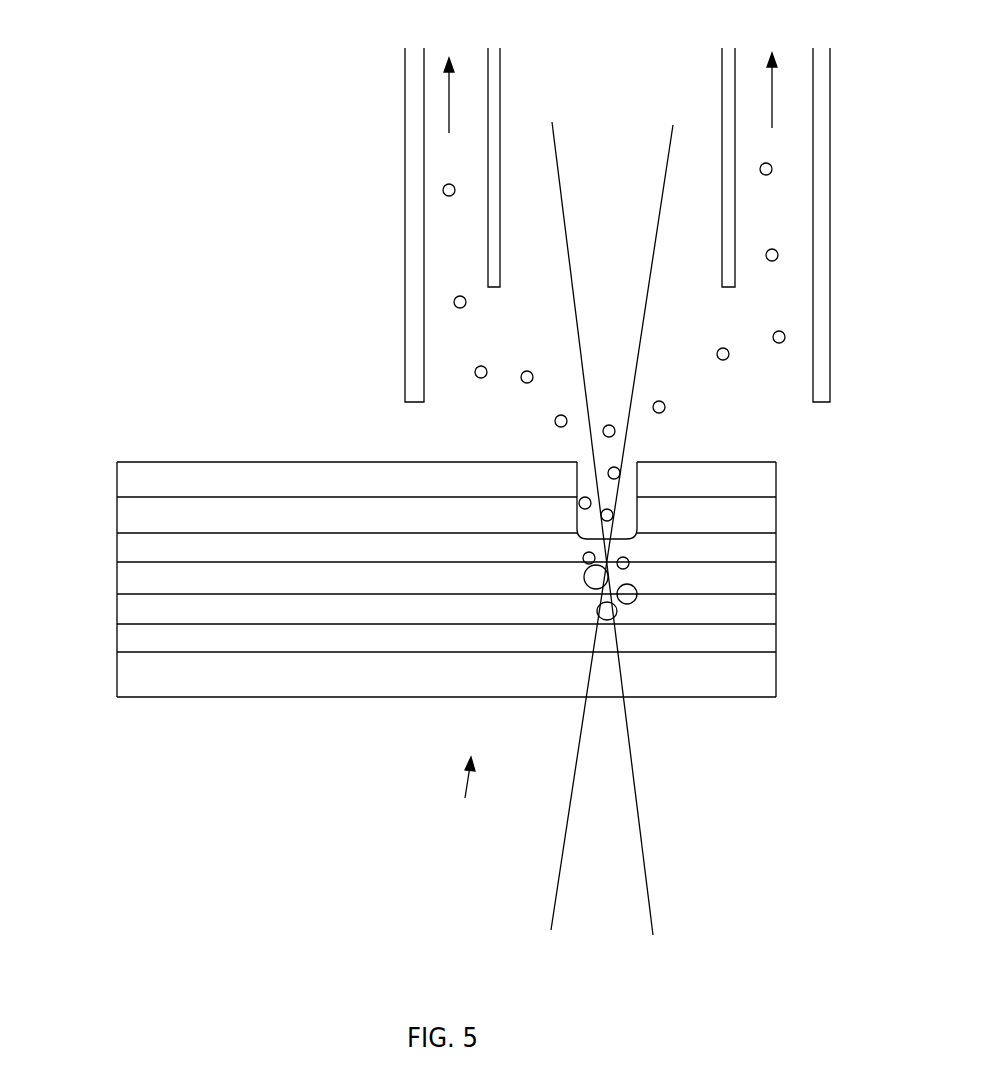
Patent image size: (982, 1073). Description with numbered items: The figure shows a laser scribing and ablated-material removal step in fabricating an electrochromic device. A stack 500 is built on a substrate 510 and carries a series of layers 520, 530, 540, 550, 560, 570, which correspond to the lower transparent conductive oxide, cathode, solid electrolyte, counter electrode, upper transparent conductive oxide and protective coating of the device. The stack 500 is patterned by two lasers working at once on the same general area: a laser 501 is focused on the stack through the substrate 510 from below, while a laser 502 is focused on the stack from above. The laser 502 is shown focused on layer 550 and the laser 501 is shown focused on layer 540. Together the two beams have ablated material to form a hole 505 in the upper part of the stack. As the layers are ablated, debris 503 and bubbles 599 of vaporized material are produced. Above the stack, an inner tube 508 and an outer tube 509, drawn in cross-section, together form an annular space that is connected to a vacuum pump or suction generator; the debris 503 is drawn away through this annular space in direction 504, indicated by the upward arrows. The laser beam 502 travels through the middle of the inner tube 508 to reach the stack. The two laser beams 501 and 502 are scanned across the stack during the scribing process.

The stack 500 is at (465, 795).
The laser 501 is at (623, 763).
The laser 502 is at (563, 220).
The debris 503 is at (666, 405).
The direction 504 is at (617, 66).
The hole 505 is at (585, 462).
The tube 508 is at (495, 88).
The tube 509 is at (410, 342).
The substrate 510 is at (313, 685).
The layer 520 is at (755, 638).
The layer 530 is at (125, 615).
The layer 540 is at (757, 577).
The layer 550 is at (125, 548).
The layer 560 is at (757, 515).
The layer 570 is at (120, 477).
The bubbles 599 is at (634, 600).